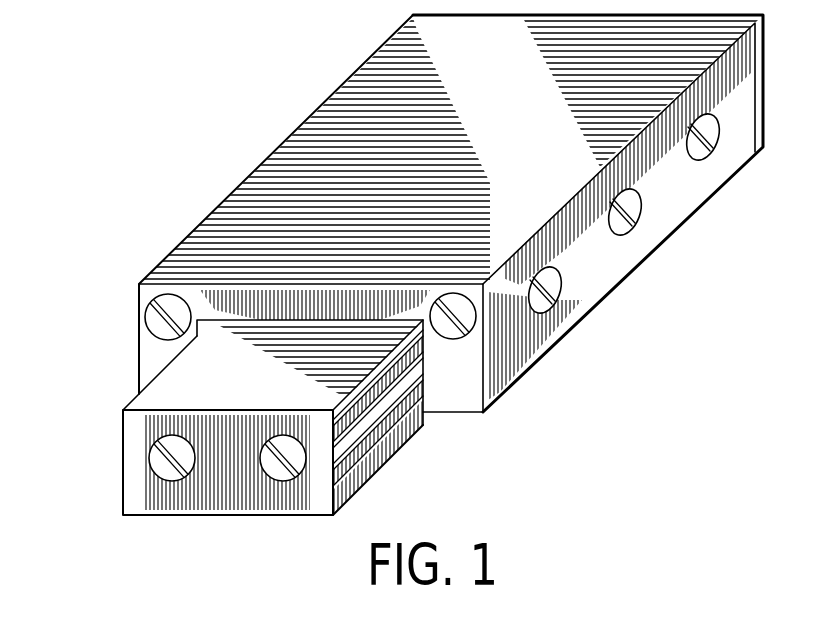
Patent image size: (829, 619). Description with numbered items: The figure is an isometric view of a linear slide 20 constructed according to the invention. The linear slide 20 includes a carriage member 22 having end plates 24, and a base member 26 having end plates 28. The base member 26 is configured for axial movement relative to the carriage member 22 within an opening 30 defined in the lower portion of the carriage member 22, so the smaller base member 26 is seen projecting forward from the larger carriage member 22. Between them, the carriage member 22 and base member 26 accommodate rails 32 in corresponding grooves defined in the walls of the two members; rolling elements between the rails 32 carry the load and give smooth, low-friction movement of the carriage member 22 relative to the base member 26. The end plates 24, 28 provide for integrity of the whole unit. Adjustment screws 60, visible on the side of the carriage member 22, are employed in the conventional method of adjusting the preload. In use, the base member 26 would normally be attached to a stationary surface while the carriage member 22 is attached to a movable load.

The linear slide 20 is at (222, 69).
The carriage member 22 is at (262, 203).
The end plates 24 is at (153, 348).
The base member 26 is at (172, 392).
The end plates 28 is at (138, 478).
The opening 30 is at (431, 431).
The rails 32 is at (358, 414).
The adjustment screws 60 is at (556, 288).